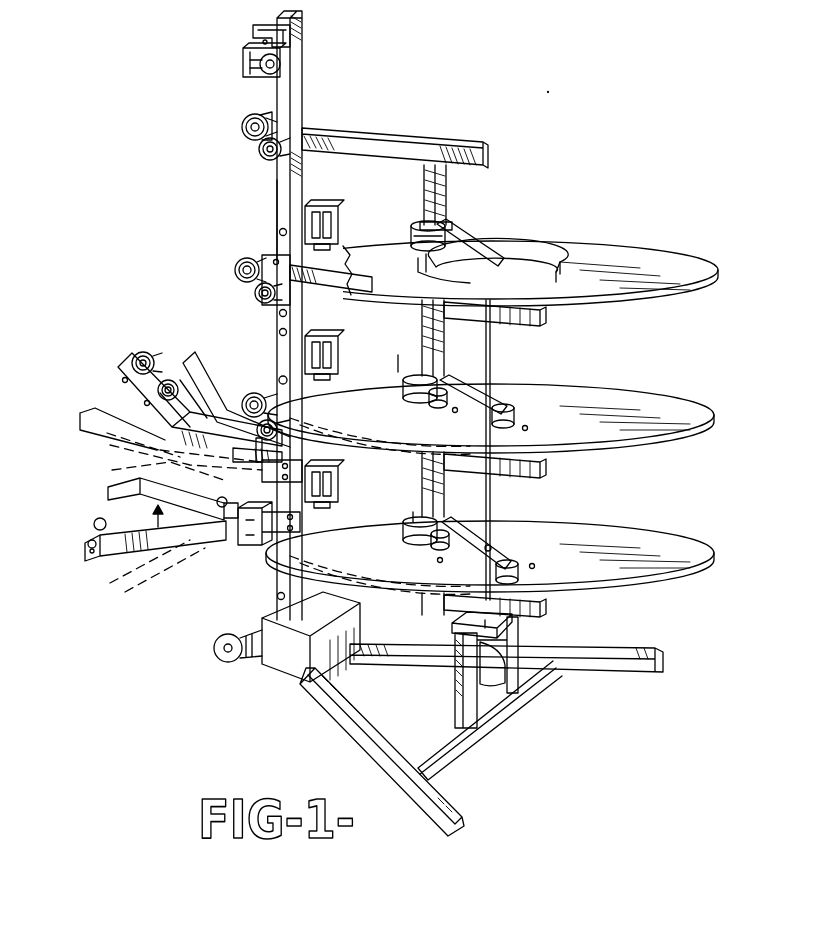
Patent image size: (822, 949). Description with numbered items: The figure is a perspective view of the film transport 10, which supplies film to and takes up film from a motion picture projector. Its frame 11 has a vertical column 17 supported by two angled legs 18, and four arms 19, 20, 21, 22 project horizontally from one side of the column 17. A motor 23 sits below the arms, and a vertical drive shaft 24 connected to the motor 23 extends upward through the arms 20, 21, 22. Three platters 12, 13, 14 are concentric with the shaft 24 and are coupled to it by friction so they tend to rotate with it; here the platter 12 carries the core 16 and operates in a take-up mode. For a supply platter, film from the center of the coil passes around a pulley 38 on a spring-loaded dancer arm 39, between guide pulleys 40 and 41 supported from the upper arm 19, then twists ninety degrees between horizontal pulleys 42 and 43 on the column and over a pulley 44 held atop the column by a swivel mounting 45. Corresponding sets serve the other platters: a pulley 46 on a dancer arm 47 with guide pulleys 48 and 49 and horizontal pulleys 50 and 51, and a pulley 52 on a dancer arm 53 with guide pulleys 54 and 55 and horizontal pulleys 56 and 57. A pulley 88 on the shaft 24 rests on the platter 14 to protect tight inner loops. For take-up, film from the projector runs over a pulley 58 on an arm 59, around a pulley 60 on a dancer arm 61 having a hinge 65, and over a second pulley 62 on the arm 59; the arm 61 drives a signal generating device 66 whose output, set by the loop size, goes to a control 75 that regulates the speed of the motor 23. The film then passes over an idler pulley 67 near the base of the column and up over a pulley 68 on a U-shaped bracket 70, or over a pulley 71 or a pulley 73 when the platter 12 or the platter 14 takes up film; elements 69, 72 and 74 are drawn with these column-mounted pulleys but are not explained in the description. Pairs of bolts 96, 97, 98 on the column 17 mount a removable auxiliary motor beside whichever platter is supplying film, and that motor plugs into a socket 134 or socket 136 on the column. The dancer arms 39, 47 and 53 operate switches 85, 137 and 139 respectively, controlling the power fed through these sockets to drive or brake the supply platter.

The film transport 10 is at (546, 94).
The frame 11 is at (303, 78).
The platter 12 is at (672, 292).
The platter 13 is at (675, 437).
The platter 14 is at (675, 573).
The core 16 is at (564, 272).
The column 17 is at (276, 200).
The angled legs 18 is at (348, 728).
The arm 19 is at (398, 138).
The arm 20 is at (362, 293).
The arm 21 is at (546, 466).
The arm 22 is at (542, 608).
The motor 23 is at (498, 696).
The vertical drive shaft 24 is at (492, 488).
The pulley 38 is at (508, 314).
The dancer arm 39 is at (456, 232).
The guide pulley 40 is at (418, 236).
The guide pulley 41 is at (418, 265).
The horizontal pulley 42 is at (259, 156).
The horizontal pulley 43 is at (241, 130).
The pulley 44 is at (262, 78).
The swivel mounting 45 is at (255, 33).
The pulley 46 is at (515, 415).
The dancer arm 47 is at (460, 380).
The guide pulley 48 is at (415, 380).
The guide pulley 49 is at (428, 398).
The horizontal pulley 50 is at (255, 292).
The horizontal pulley 51 is at (236, 266).
The pulley 52 is at (521, 569).
The dancer arm 53 is at (470, 530).
The guide pulley 54 is at (410, 530).
The guide pulley 55 is at (447, 535).
The horizontal pulley 56 is at (257, 435).
The horizontal pulley 57 is at (257, 393).
The pulley 58 is at (140, 352).
The arm 59 is at (118, 398).
The pulley 60 is at (100, 518).
The dancer arm 61 is at (128, 548).
The second pulley 62 is at (188, 350).
The hinge 65 is at (242, 480).
The signal generating device 66 is at (238, 532).
The idler pulley 67 is at (214, 650).
The pulley 68 is at (334, 372).
The roller 69 is at (332, 356).
The bracket 70 is at (320, 343).
The pulley 71 is at (318, 236).
The roller bracket 72 is at (352, 186).
The pulley 73 is at (312, 506).
The roller bracket 74 is at (340, 496).
The control 75 is at (362, 628).
The switch 85 is at (456, 213).
The pulley 88 is at (492, 547).
The pair of bolts 96 is at (279, 315).
The pair of bolts 97 is at (304, 470).
The pair of bolts 98 is at (276, 596).
The socket 134 is at (278, 232).
The socket 136 is at (281, 377).
The switch 137 is at (398, 355).
The switch 139 is at (413, 513).